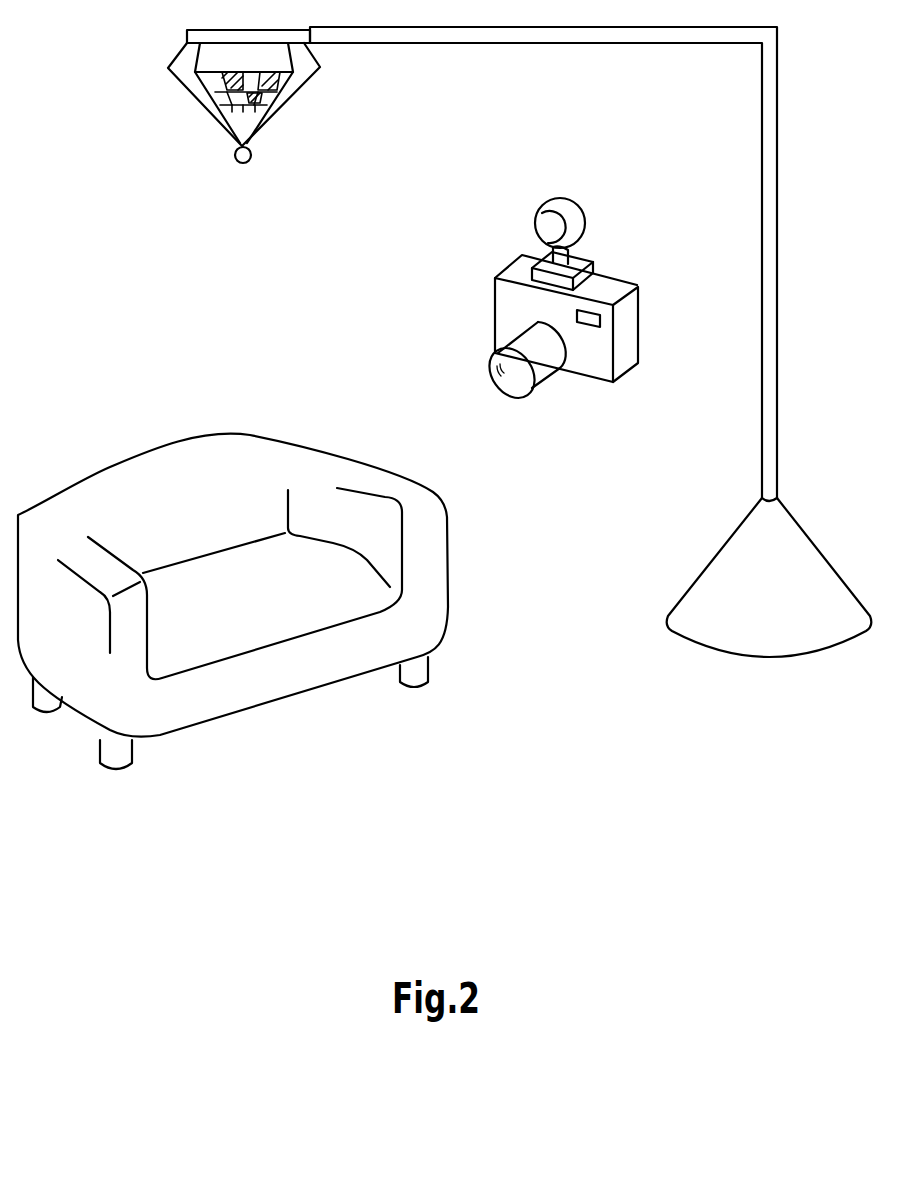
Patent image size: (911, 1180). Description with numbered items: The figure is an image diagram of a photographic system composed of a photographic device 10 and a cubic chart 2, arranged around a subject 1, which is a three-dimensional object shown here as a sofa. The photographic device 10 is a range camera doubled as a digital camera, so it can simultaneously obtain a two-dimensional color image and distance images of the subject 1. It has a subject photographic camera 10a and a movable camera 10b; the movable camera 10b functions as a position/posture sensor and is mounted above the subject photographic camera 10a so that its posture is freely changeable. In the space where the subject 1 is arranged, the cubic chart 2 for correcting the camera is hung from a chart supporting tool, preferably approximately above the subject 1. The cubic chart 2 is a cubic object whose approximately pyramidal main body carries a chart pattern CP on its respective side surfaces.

The subject 1 is at (255, 432).
The cubic chart 2 is at (168, 67).
The chart pattern CP is at (270, 97).
The photographic device 10 is at (534, 272).
The subject photographic camera 10a is at (495, 316).
The movable camera 10b is at (572, 200).